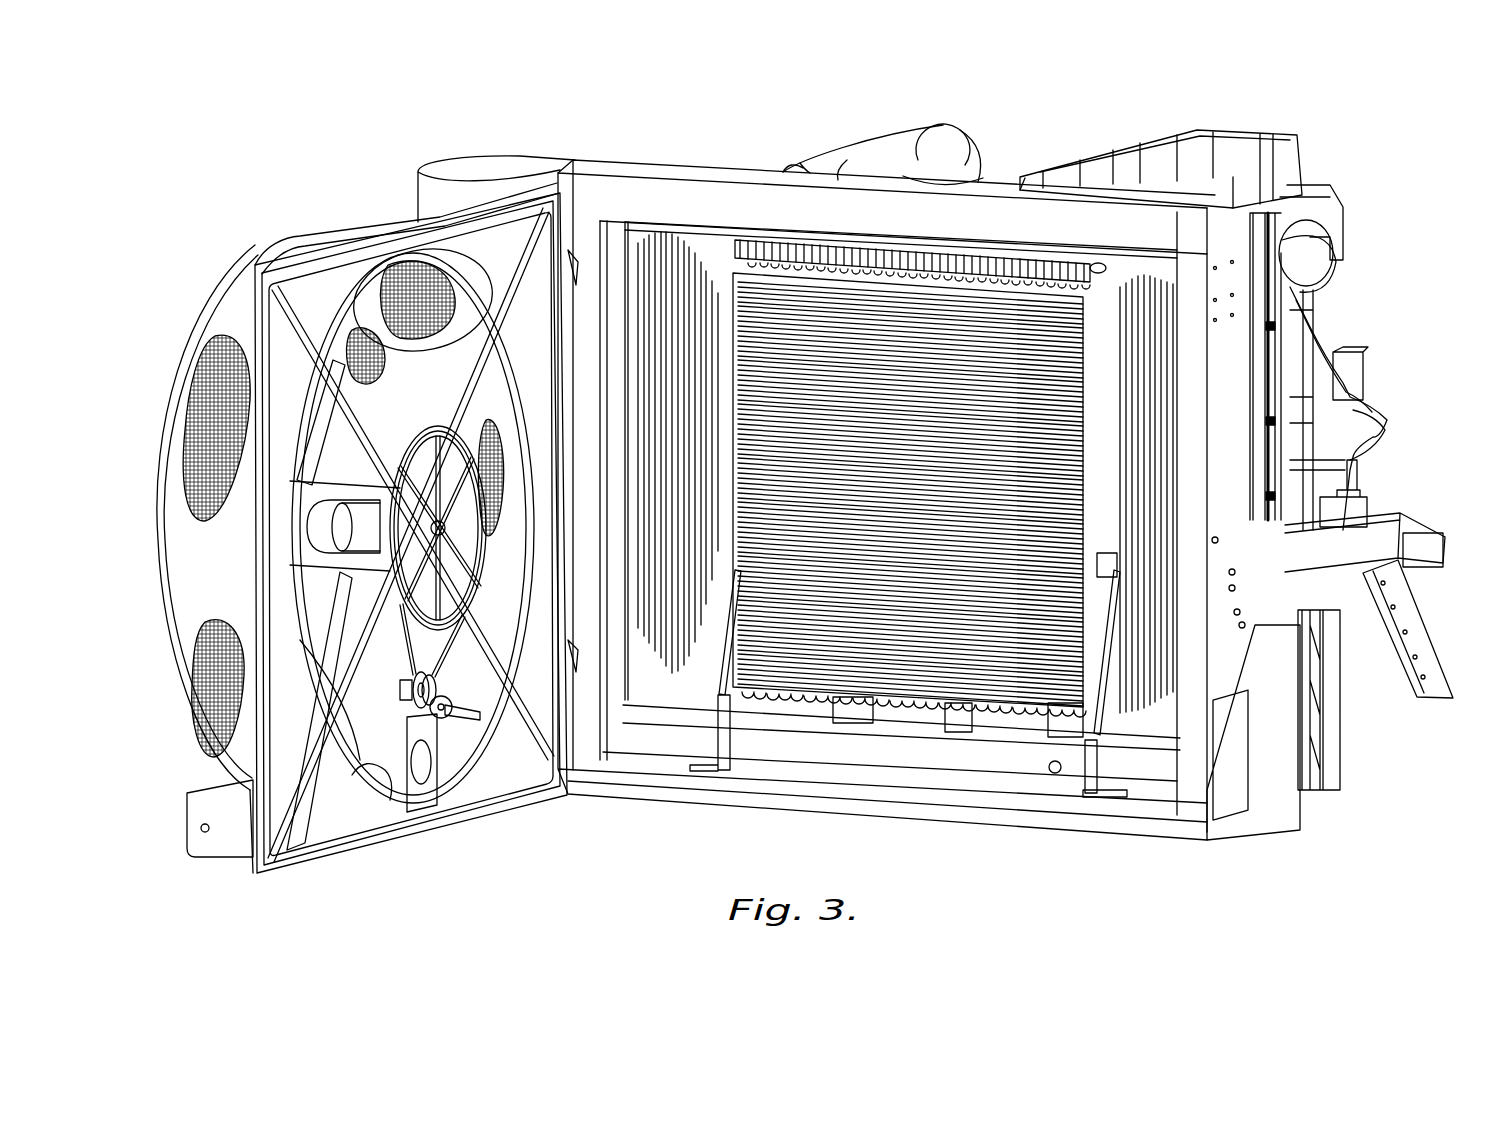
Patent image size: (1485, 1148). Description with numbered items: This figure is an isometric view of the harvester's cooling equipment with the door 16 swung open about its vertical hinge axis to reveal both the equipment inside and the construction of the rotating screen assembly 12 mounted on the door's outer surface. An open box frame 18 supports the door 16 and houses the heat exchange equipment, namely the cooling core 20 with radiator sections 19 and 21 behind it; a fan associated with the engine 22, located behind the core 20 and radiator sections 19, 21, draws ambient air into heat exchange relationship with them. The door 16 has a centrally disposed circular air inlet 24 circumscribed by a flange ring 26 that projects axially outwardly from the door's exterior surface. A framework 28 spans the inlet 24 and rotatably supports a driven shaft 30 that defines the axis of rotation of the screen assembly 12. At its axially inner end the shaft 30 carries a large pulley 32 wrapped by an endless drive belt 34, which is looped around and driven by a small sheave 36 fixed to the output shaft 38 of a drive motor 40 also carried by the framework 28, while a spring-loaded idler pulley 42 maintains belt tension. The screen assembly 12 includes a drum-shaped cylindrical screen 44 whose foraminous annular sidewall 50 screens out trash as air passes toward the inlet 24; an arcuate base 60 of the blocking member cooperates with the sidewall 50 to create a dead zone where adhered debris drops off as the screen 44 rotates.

The screen assembly 12 is at (235, 268).
The door 16 is at (440, 840).
The open box frame 18 is at (1000, 195).
The radiator section 19 is at (705, 242).
The cooling core 20 is at (960, 315).
The radiator section 21 is at (1140, 300).
The engine 22 is at (1270, 138).
The air inlet 24 is at (368, 782).
The flange ring 26 is at (505, 610).
The framework 28 is at (520, 278).
The driven shaft 30 is at (325, 538).
The large pulley 32 is at (490, 475).
The drive belt 34 is at (470, 614).
The small sheave 36 is at (440, 722).
The output shaft 38 is at (452, 705).
The drive motor 40 is at (395, 688).
The idler pulley 42 is at (408, 700).
The screen 44 is at (152, 523).
The sidewall 50 is at (198, 598).
The arcuate base 60 is at (442, 723).